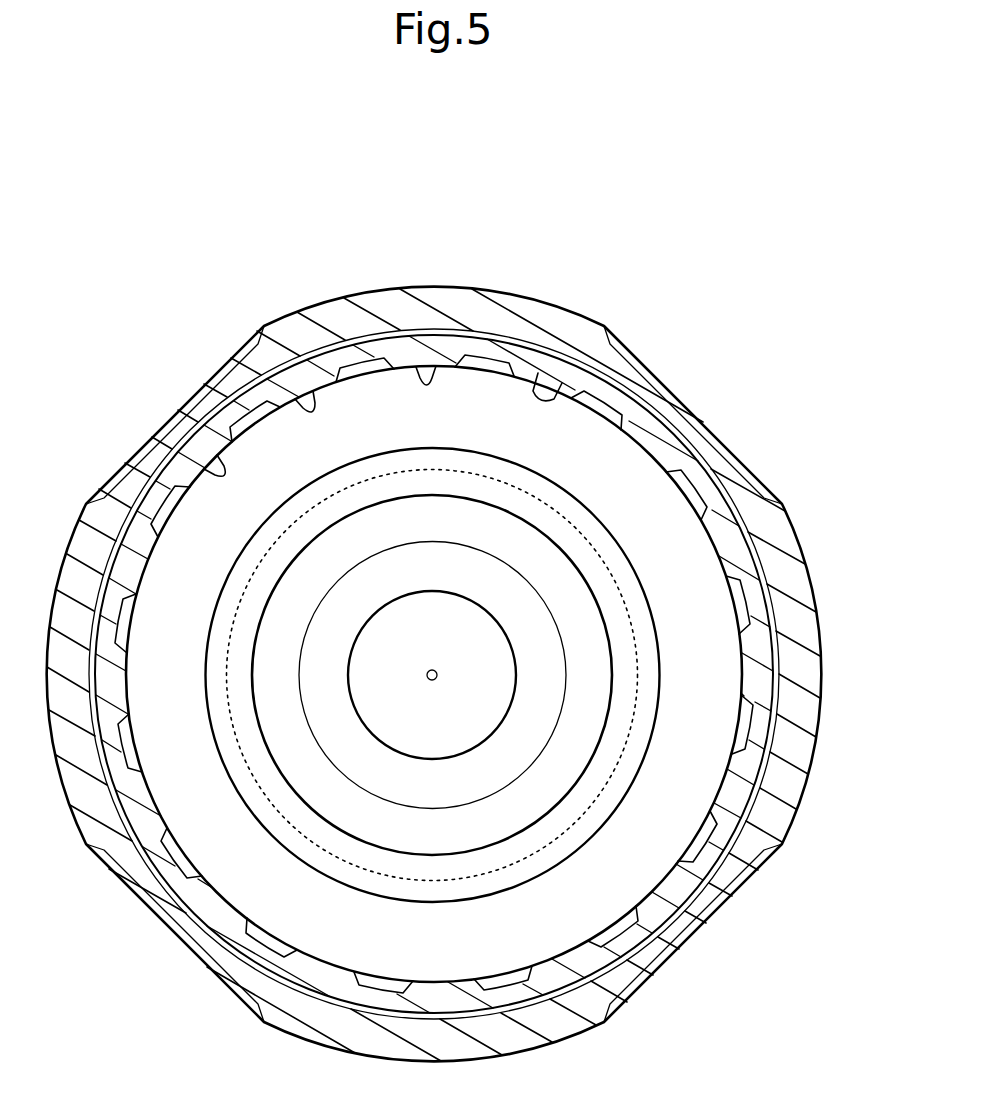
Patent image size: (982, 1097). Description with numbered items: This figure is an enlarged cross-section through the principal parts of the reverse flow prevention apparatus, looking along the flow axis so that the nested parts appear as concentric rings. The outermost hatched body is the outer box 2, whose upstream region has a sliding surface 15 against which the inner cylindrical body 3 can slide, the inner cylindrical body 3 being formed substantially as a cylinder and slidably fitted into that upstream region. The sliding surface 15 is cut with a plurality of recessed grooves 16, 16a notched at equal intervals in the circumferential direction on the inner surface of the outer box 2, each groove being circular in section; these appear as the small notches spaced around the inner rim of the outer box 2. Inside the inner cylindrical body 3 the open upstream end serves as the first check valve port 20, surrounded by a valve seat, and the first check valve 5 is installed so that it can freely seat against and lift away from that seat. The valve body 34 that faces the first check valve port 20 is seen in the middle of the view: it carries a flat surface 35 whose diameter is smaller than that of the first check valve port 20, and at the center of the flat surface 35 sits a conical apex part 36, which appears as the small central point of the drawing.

The outer box 2 is at (652, 428).
The inner cylindrical body 3 is at (267, 880).
The first check valve 5 is at (590, 668).
The sliding surface 15 is at (422, 382).
The recessed groove 16 is at (297, 403).
The recessed groove 16a is at (543, 392).
The first check valve port 20 is at (548, 542).
The check valve body 34 is at (549, 784).
The flat surface 35 is at (462, 777).
The apex part 36 is at (485, 700).